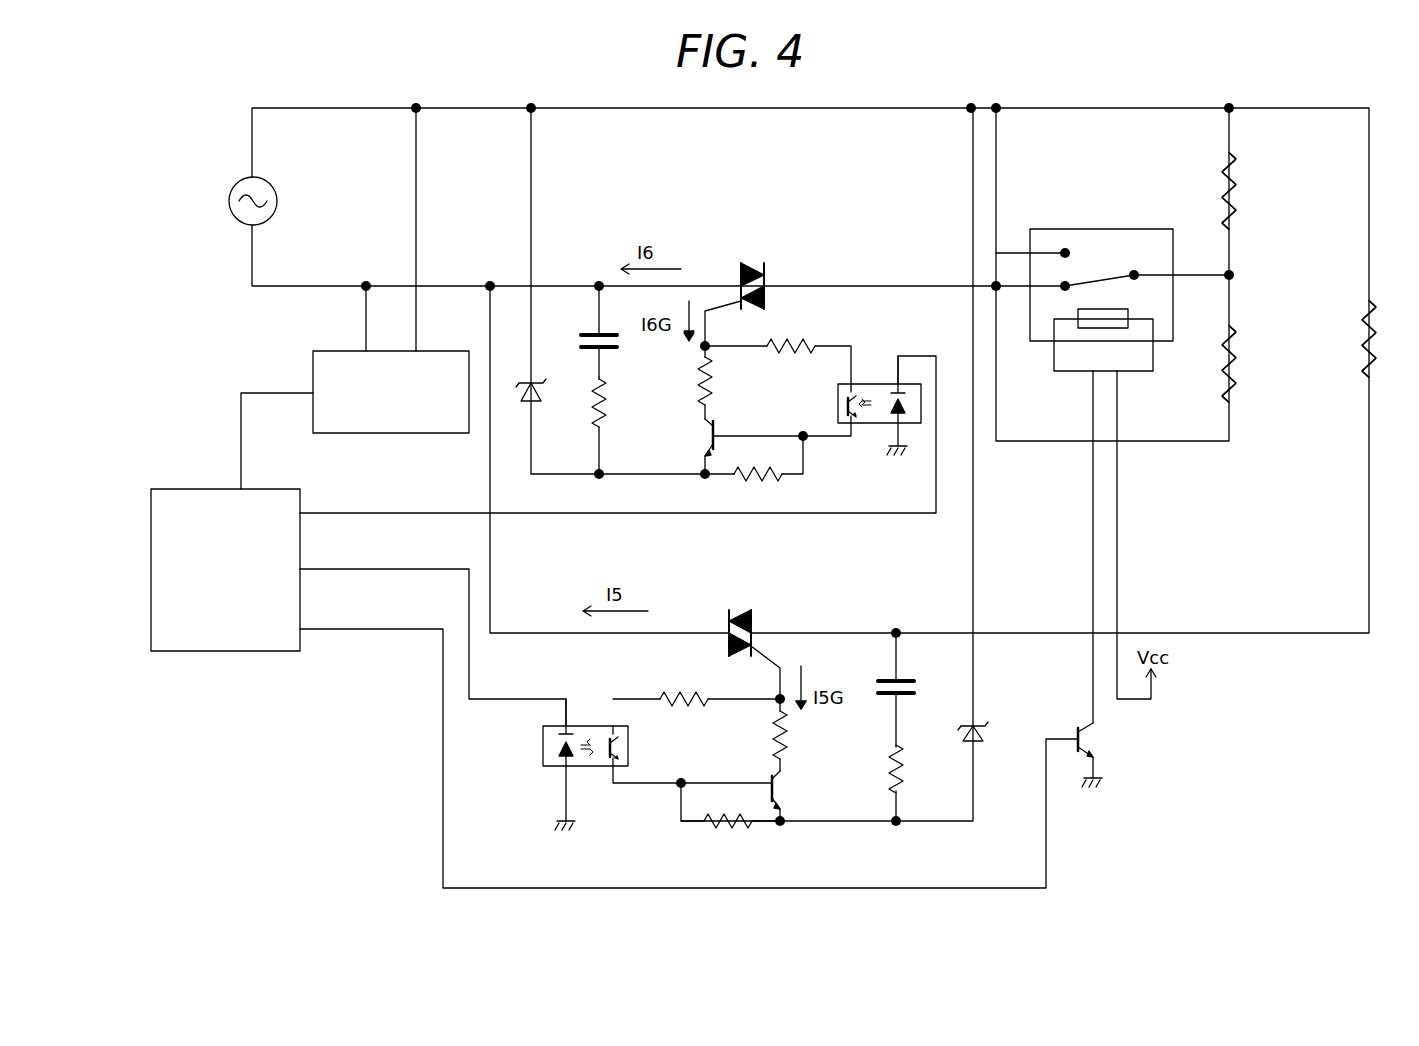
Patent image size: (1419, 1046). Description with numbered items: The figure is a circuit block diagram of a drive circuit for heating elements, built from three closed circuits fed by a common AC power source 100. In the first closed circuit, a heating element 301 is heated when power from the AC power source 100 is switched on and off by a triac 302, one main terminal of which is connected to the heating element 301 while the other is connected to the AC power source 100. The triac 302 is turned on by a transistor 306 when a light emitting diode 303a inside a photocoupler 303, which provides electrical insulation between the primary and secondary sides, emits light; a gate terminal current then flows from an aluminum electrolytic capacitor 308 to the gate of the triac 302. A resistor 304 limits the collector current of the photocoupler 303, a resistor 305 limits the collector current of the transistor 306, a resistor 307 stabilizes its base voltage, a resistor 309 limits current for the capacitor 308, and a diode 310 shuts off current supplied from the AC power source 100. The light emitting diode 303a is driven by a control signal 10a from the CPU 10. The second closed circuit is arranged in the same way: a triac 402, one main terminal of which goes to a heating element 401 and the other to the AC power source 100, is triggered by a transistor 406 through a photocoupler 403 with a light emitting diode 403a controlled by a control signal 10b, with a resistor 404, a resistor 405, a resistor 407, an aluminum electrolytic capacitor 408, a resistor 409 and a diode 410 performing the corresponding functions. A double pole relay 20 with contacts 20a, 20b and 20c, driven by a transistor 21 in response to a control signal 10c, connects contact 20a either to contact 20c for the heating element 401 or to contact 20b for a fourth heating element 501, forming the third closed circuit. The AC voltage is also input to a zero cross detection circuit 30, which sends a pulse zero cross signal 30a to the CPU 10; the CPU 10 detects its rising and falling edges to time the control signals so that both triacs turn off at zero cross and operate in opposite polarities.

The AC power source 100 is at (232, 210).
The zero cross detection circuit 30 is at (338, 350).
The zero cross signal 30a is at (233, 416).
The CPU 10 is at (205, 488).
The control signal 10a is at (433, 625).
The control signal 10b is at (618, 434).
The control signal 10c is at (689, 735).
The triac 402 is at (745, 261).
The photocoupler 403 is at (868, 427).
The light emitting diode 403a is at (891, 380).
The resistor 404 is at (795, 342).
The resistor 405 is at (712, 377).
The transistor 406 is at (713, 426).
The resistor 407 is at (757, 477).
The aluminum electrolytic capacitor 408 is at (605, 348).
The resistor 409 is at (605, 405).
The diode 410 is at (540, 395).
The third heating element 401 is at (1240, 186).
The fourth heating element 501 is at (1241, 394).
The heating element 301 is at (1362, 342).
The relay 20 is at (1088, 228).
The relay contact 20a is at (1133, 270).
The relay contact 20b is at (1064, 252).
The relay contact 20c is at (1064, 290).
The triac 302 is at (738, 607).
The photocoupler 303 is at (603, 787).
The light emitting diode 303a is at (550, 738).
The resistor 304 is at (679, 696).
The resistor 305 is at (773, 740).
The transistor 306 is at (762, 778).
The resistor 307 is at (728, 824).
The aluminum electrolytic capacitor 308 is at (912, 686).
The resistor 309 is at (904, 766).
The diode 310 is at (984, 739).
The transistor 21 is at (1100, 747).